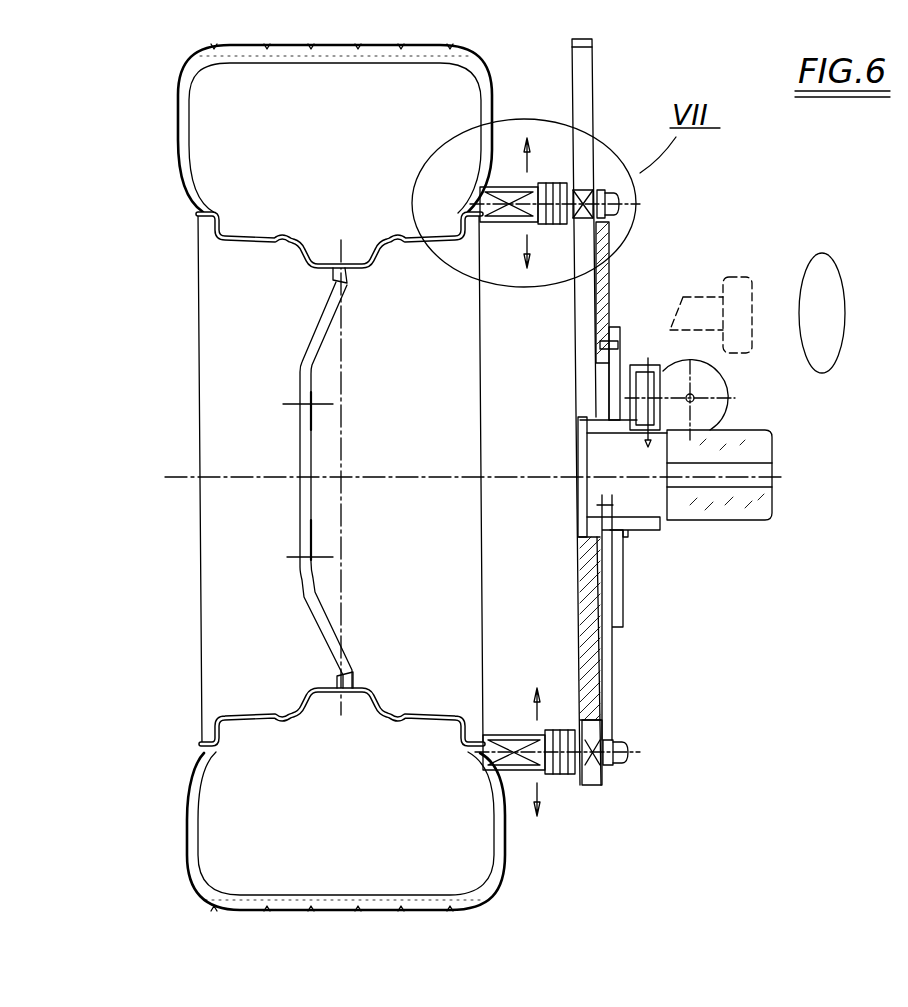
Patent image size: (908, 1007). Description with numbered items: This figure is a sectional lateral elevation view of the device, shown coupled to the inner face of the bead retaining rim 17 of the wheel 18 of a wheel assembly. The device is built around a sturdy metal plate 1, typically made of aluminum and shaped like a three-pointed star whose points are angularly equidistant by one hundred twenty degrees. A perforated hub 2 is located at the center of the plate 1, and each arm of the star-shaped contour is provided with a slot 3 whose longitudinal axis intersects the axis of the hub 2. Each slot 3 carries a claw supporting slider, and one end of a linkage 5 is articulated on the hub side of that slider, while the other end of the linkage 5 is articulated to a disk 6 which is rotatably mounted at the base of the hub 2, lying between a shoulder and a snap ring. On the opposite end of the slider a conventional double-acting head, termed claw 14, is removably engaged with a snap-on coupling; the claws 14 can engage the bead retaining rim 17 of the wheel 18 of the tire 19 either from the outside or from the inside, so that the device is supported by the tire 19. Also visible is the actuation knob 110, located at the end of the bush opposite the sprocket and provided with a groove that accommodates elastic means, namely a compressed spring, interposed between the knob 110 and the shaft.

The metal plate 1 is at (578, 578).
The perforated hub 2 is at (742, 520).
The slot 3 is at (590, 60).
The linkage 5 is at (612, 288).
The disk 6 is at (625, 587).
The claw 14 is at (512, 227).
The bead retaining rim 17 is at (481, 747).
The wheel 18 is at (410, 713).
The tire 19 is at (357, 58).
The actuation knob 110 is at (746, 277).